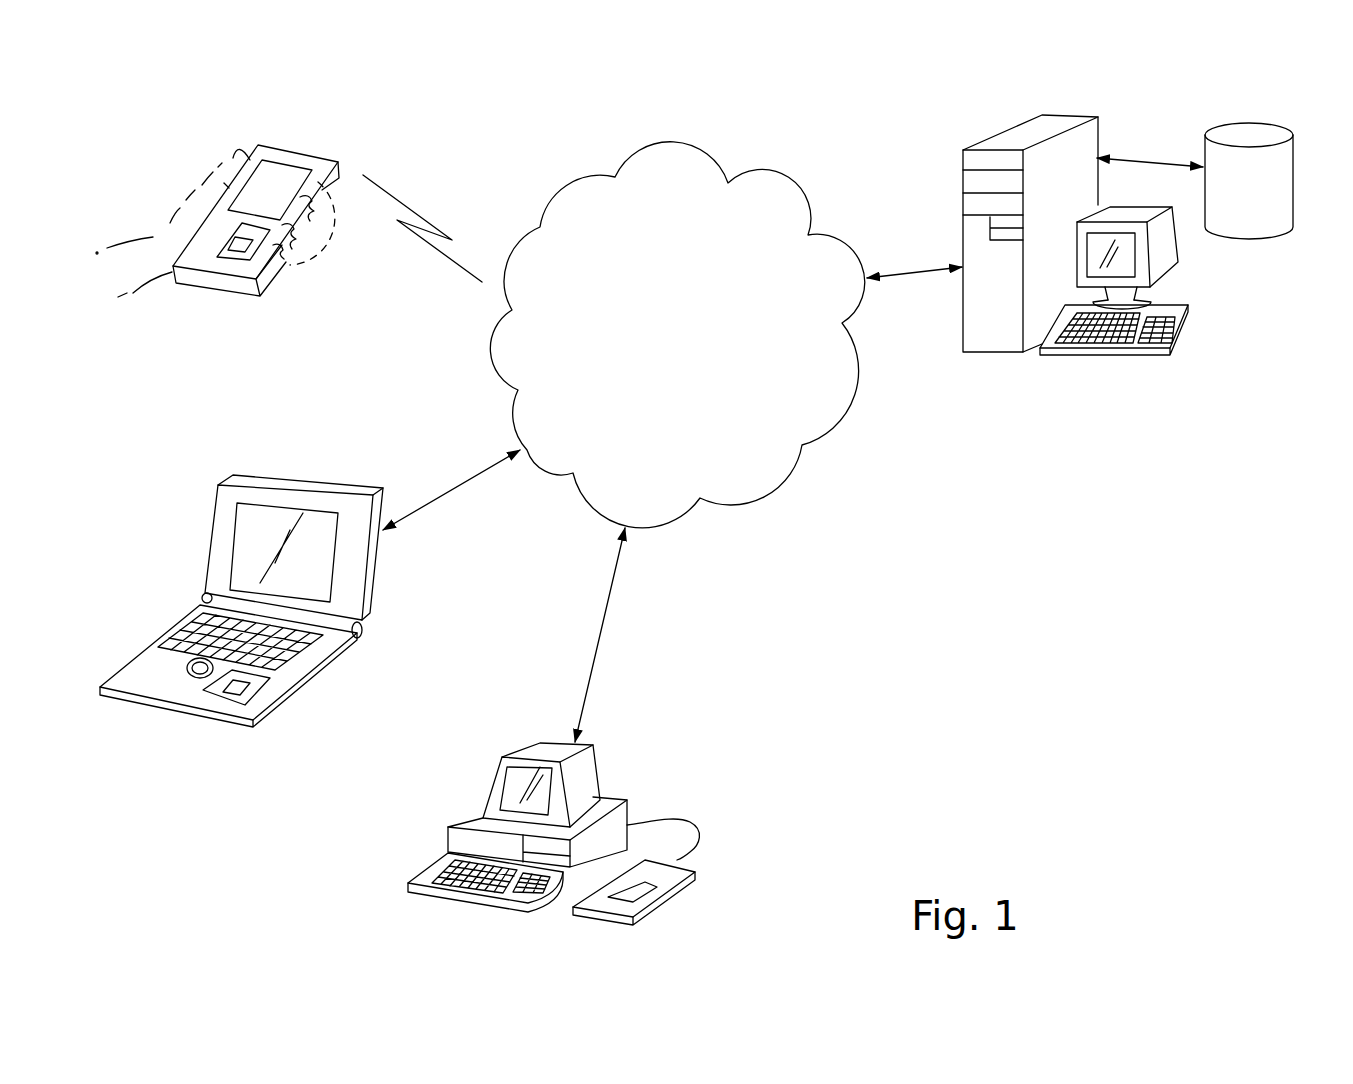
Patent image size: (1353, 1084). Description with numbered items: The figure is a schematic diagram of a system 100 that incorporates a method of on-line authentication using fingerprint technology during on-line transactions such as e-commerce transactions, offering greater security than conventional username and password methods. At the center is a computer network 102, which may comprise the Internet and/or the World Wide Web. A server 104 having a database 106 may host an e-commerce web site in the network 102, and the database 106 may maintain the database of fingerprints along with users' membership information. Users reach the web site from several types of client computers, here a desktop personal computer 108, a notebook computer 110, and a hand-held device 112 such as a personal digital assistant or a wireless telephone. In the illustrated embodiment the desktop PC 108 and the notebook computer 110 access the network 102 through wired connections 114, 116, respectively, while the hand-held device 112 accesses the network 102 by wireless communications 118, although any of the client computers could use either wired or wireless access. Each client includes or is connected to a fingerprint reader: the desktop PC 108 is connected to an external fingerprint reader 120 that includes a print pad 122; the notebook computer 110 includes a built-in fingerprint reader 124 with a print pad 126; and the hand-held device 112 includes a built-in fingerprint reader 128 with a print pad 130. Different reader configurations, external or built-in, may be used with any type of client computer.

The system 100 is at (933, 552).
The computer network 102 is at (648, 289).
The server 104 is at (1025, 132).
The database 106 is at (1237, 128).
The desktop personal computer 108 is at (533, 750).
The notebook computer 110 is at (217, 512).
The hand-held device 112 is at (295, 150).
The wired connection 114 is at (600, 633).
The wired connection 116 is at (448, 490).
The wireless communications 118 is at (408, 208).
The external fingerprint reader 120 is at (670, 873).
The print pad 122 is at (633, 888).
The built-in fingerprint reader 124 is at (210, 692).
The print pad 126 is at (232, 690).
The built-in fingerprint reader 128 is at (240, 250).
The print pad 130 is at (255, 267).